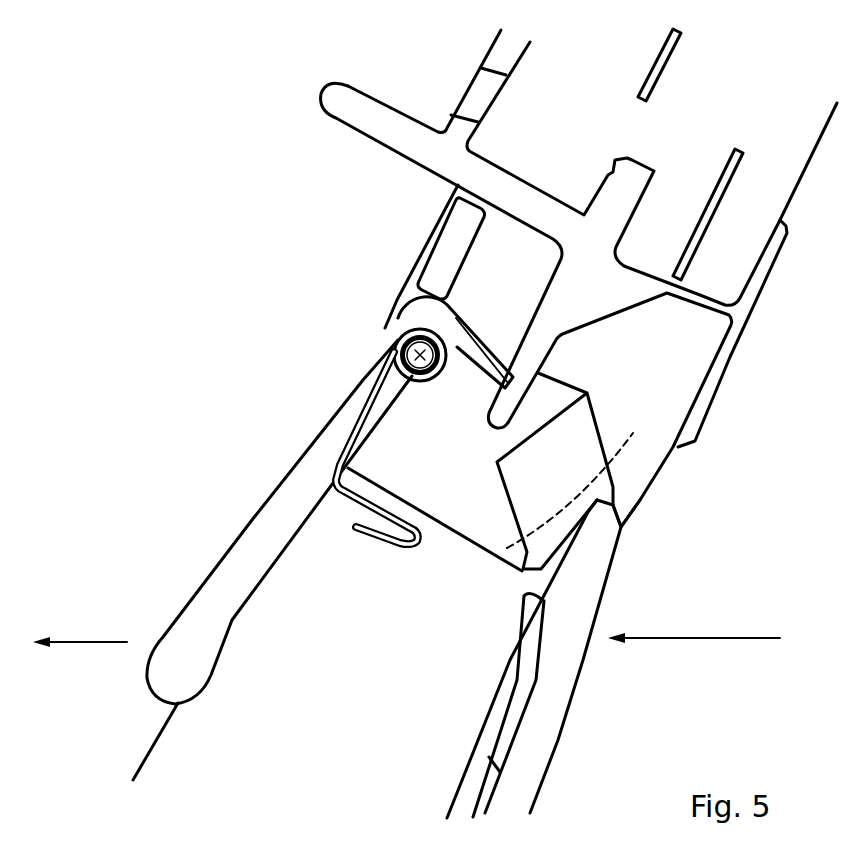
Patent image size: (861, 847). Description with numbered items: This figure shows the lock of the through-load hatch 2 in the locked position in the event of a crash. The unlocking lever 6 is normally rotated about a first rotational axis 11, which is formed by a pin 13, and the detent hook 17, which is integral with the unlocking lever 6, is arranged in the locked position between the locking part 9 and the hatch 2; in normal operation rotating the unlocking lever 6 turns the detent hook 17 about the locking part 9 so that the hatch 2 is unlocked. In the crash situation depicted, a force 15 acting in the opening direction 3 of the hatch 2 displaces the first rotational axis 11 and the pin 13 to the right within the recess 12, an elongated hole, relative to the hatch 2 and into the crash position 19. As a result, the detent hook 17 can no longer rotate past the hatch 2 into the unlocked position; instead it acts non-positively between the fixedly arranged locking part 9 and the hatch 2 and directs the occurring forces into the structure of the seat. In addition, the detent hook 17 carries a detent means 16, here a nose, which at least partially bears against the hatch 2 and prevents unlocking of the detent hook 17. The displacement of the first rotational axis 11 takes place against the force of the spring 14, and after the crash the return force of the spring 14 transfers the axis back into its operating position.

The through-load hatch 2 is at (537, 722).
The opening direction 3 is at (108, 641).
The unlocking lever 6 is at (240, 562).
The locking part 9 is at (505, 407).
The first rotational axis 11 is at (418, 351).
The recess 12 is at (392, 340).
The pin 13 is at (412, 363).
The spring 14 is at (352, 440).
The force 15 is at (697, 637).
The detent means 16 is at (613, 493).
The detent hook 17 is at (583, 463).
The crash position 19 is at (420, 355).